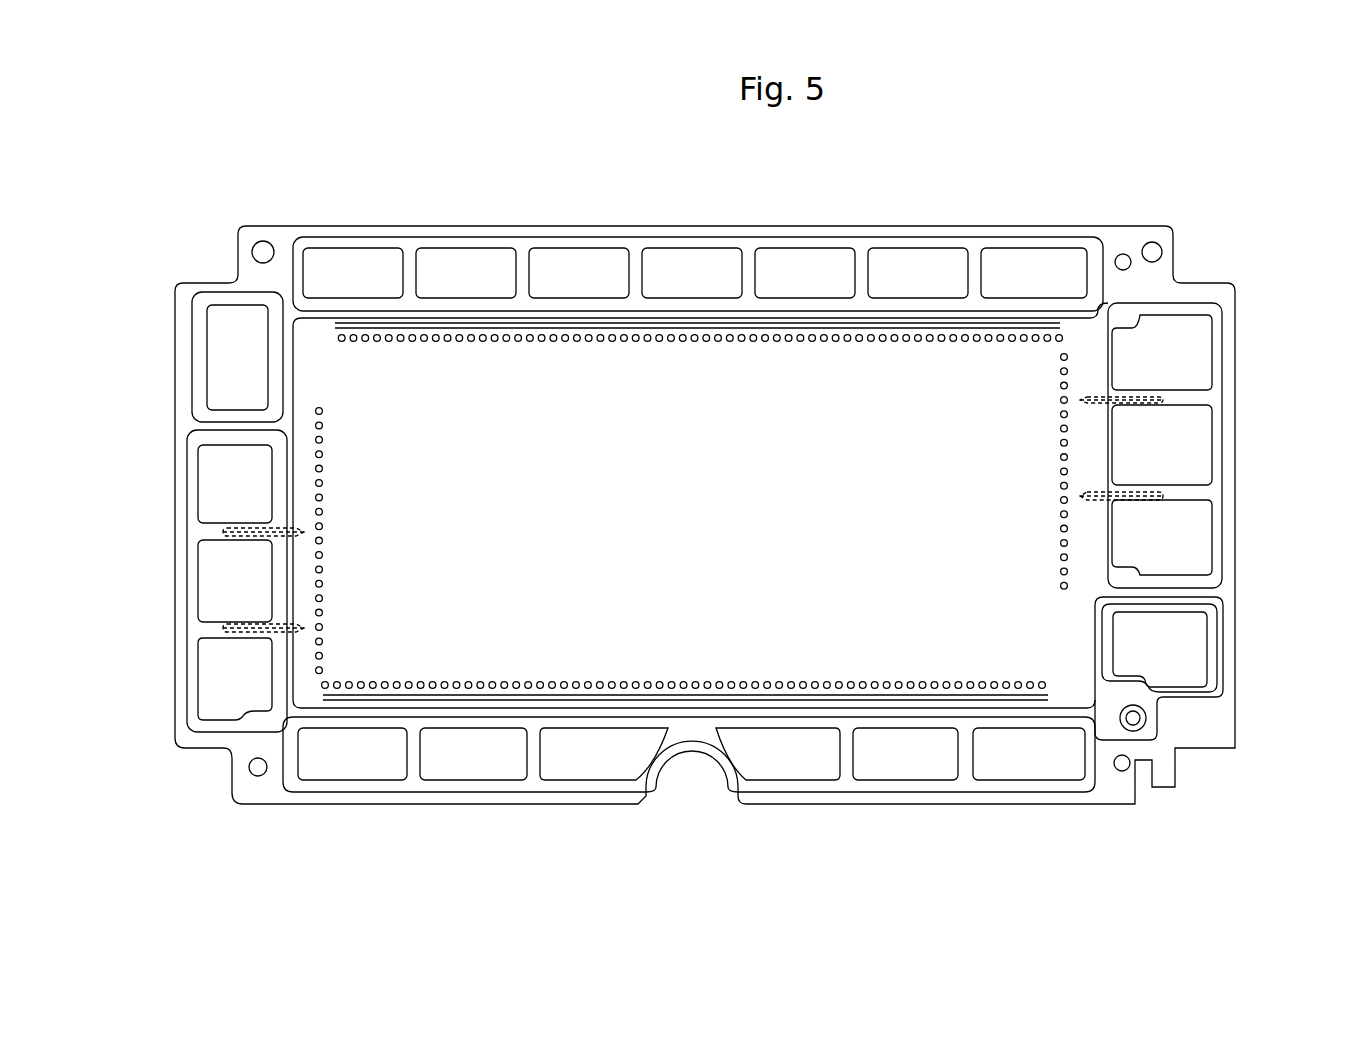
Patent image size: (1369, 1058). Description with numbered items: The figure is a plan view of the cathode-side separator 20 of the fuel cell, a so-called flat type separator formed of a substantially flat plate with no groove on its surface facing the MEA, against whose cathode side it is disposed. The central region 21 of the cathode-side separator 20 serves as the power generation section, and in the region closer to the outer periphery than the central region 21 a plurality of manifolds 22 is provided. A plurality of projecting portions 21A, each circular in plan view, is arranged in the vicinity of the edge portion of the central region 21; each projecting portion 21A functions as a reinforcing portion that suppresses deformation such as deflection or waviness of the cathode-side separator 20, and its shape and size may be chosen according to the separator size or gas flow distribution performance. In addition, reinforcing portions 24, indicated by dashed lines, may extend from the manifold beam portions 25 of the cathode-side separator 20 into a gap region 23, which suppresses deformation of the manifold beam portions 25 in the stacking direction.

The cathode-side separator 20 is at (958, 197).
The central region 21 is at (695, 647).
The projecting portion 21A is at (728, 342).
The manifold 22 is at (205, 380).
The gap region 23 is at (288, 475).
The reinforcing portion 24 is at (302, 515).
The manifold beam portion 25 is at (208, 542).